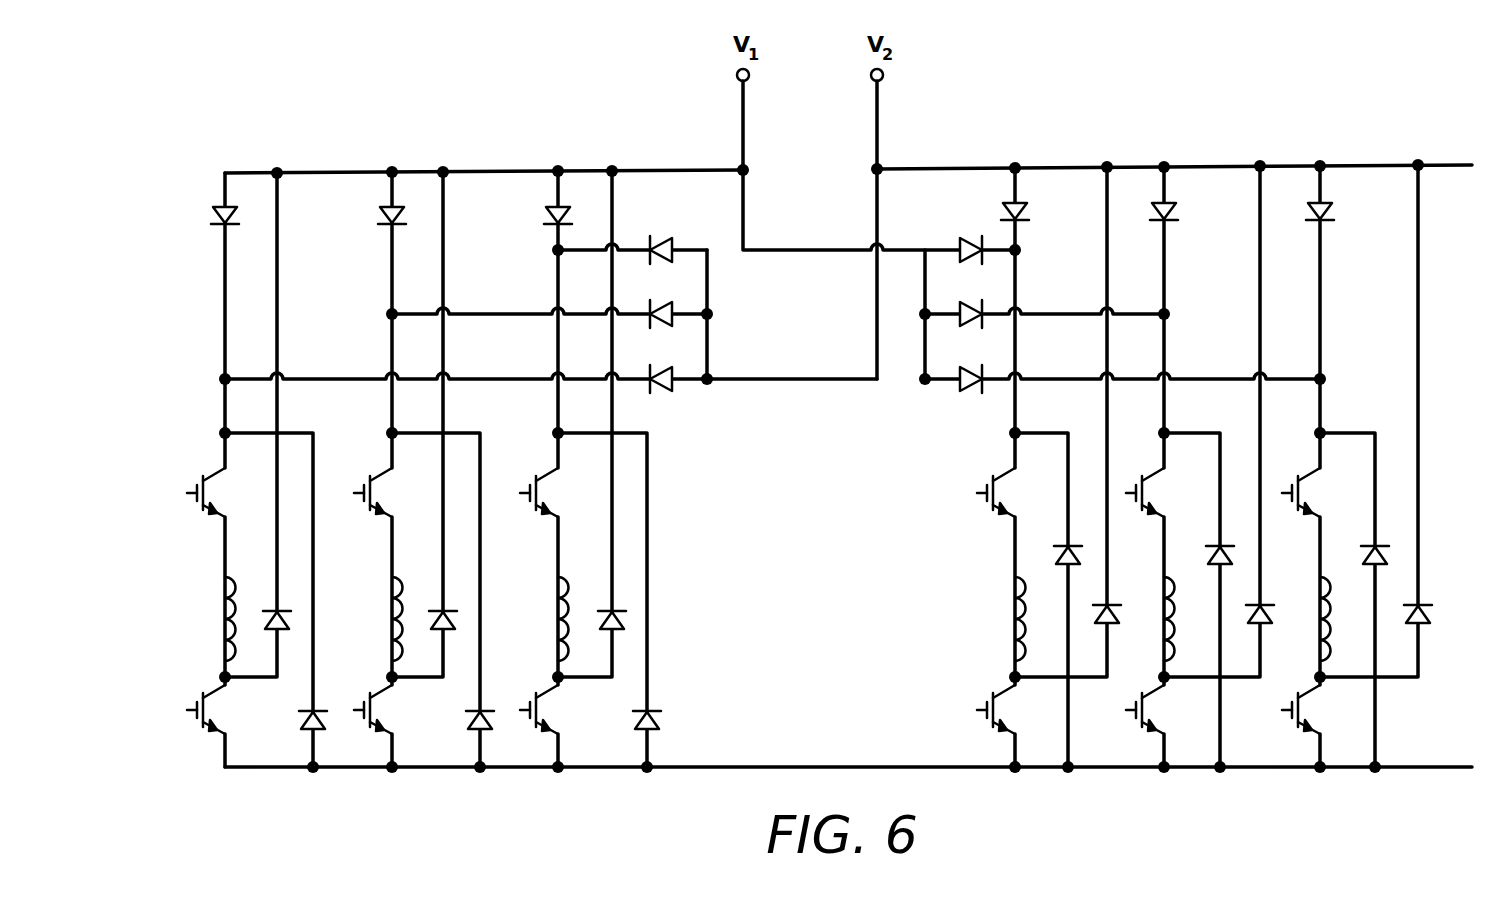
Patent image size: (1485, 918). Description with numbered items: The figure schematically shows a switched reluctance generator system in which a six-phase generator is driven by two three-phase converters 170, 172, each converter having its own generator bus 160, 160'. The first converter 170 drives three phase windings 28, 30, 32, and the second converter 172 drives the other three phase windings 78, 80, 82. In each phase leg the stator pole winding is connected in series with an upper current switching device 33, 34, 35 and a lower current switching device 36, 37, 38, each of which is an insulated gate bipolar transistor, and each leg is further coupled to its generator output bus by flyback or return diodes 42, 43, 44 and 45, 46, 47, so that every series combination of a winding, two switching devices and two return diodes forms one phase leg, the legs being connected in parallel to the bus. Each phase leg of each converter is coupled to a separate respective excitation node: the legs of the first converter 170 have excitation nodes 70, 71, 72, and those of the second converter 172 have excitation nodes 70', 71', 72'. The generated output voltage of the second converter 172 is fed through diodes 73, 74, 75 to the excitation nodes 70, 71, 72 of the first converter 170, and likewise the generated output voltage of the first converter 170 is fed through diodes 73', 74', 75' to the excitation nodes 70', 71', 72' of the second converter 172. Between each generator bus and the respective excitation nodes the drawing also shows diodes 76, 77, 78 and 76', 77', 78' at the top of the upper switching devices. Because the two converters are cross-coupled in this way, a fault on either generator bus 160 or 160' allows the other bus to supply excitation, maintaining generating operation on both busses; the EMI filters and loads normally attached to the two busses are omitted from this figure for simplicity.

The three-phase converter 170 is at (380, 100).
The three-phase converter 172 is at (1245, 95).
The generator bus 160 is at (484, 143).
The generator bus 160' is at (1174, 139).
The diode 73 is at (686, 393).
The diode 74 is at (677, 302).
The diode 75 is at (688, 233).
The diode 76 is at (204, 195).
The diode 77 is at (360, 206).
The phase winding 78 is at (755, 430).
The diode 73' is at (950, 400).
The diode 74' is at (954, 303).
The diode 75' is at (950, 235).
The diode 76' is at (1050, 204).
The diode 77' is at (1200, 204).
The diode 78' is at (1355, 203).
The excitation node 70 is at (193, 453).
The excitation node 71 is at (364, 450).
The excitation node 72 is at (532, 452).
The excitation node 70' is at (1049, 419).
The excitation node 71' is at (1199, 418).
The excitation node 72' is at (1353, 413).
The upper current switching device 33 is at (205, 508).
The upper current switching device 34 is at (372, 508).
The upper current switching device 35 is at (538, 508).
The lower current switching device 36 is at (205, 724).
The lower current switching device 37 is at (372, 724).
The lower current switching device 38 is at (538, 724).
The phase winding 28 is at (221, 620).
The phase winding 30 is at (389, 618).
The phase winding 32 is at (555, 617).
The phase winding 80 is at (1140, 630).
The phase winding 82 is at (1296, 630).
The flyback diode 42 is at (272, 632).
The flyback diode 43 is at (438, 632).
The flyback diode 44 is at (607, 632).
The flyback diode 45 is at (1062, 565).
The flyback diode 46 is at (478, 733).
The flyback diode 47 is at (652, 722).